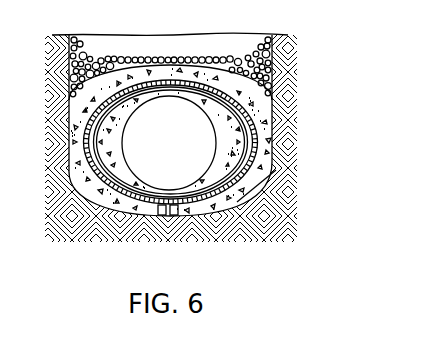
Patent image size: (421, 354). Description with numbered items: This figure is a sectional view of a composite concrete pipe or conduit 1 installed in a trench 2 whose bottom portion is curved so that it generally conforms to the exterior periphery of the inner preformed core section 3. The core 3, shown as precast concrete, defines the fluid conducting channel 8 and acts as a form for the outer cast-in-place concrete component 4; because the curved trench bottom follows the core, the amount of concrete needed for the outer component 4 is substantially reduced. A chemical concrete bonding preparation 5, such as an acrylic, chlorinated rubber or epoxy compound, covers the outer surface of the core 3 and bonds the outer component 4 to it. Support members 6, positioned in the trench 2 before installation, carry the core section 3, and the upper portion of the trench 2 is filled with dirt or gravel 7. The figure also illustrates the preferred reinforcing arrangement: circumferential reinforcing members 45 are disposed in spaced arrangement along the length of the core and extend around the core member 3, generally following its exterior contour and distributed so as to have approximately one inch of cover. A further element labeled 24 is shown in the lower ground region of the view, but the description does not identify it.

The composite concrete pipe or conduit 1 is at (46, 213).
The trench 2 is at (72, 63).
The inner preformed core section 3 is at (120, 119).
The outer cast-in-place concrete component 4 is at (80, 165).
The chemical concrete bonding preparation 5 is at (275, 110).
The support members 6 is at (138, 224).
The dirt or gravel 7 is at (212, 58).
The fluid conducting channel 8 is at (184, 147).
The ground support 24 is at (288, 193).
The circumferential reinforcing members 45 is at (273, 162).